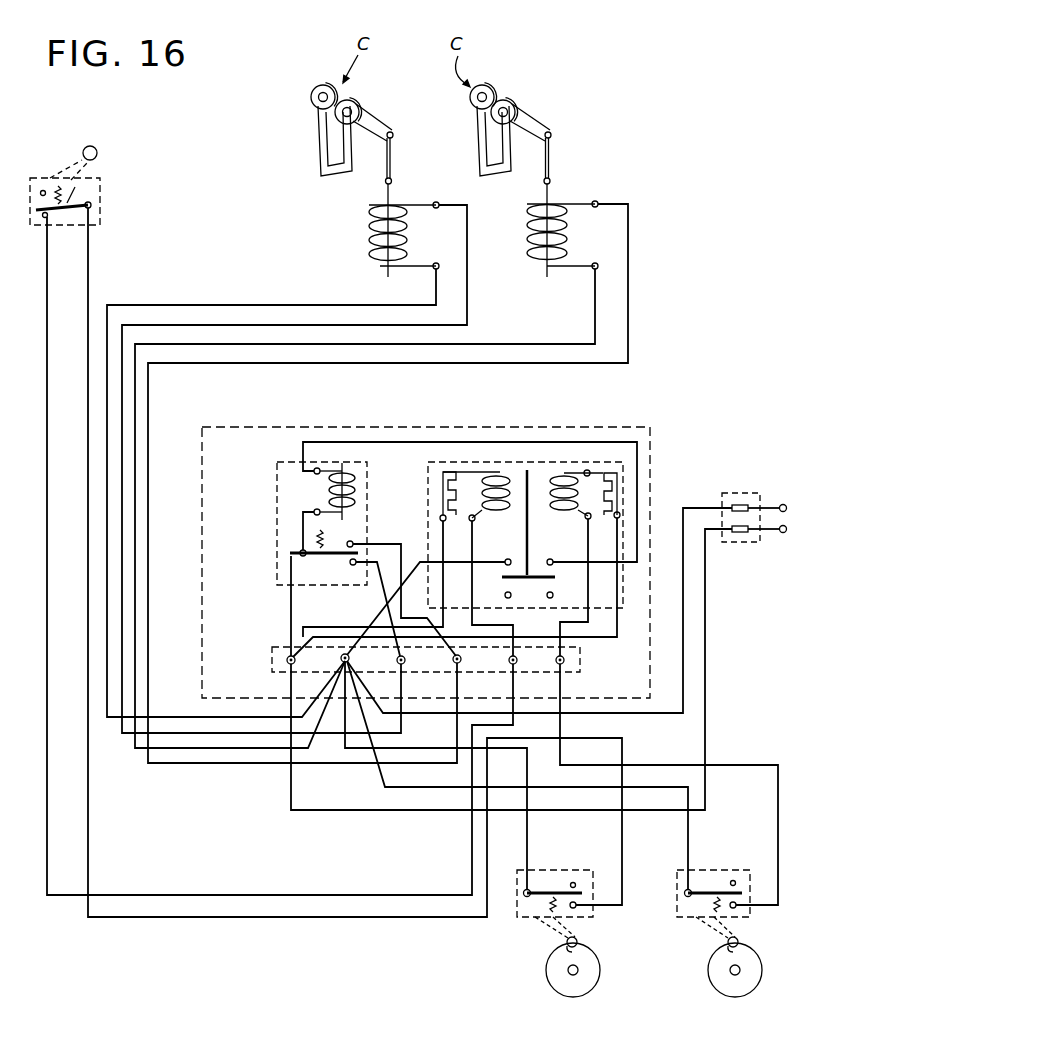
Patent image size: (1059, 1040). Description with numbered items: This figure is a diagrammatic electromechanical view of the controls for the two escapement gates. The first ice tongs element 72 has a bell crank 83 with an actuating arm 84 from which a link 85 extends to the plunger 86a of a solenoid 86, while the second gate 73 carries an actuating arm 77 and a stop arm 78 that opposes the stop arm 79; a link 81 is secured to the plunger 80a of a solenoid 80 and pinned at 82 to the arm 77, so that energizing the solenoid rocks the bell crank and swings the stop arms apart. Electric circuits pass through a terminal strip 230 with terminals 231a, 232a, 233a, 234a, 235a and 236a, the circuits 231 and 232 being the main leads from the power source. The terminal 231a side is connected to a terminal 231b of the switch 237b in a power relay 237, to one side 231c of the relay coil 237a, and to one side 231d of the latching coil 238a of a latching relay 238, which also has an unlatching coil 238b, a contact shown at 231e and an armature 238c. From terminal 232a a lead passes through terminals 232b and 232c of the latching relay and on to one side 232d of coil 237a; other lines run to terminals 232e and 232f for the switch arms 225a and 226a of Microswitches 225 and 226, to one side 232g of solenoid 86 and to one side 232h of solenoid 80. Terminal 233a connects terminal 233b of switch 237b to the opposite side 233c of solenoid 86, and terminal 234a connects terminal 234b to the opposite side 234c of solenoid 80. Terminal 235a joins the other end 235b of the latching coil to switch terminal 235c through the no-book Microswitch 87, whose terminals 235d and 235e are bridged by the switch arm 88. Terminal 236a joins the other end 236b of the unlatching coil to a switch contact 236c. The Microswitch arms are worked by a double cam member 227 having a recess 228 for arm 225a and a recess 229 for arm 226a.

The escapement gate 72 is at (306, 96).
The bell crank 83 is at (380, 106).
The actuating arm 84 is at (388, 122).
The link 85 is at (394, 152).
The solenoid 86 is at (368, 207).
The plunger 86a is at (388, 277).
The side of solenoid 232g is at (418, 230).
The opposite side of solenoid 233c is at (434, 203).
The escapement gate 73 is at (504, 86).
The actuating arm 77 is at (534, 108).
The pin 82 is at (551, 125).
The link 81 is at (554, 154).
The stop arm 79 is at (478, 148).
The stop arm 78 is at (507, 172).
The solenoid 80 is at (567, 204).
The plunger 80a is at (547, 278).
The opposite side of solenoid 234c is at (599, 203).
The side of solenoid 232h is at (595, 266).
The switch arm 88 is at (72, 200).
The Microswitch 87 is at (95, 204).
The terminal 235e is at (92, 205).
The terminal 235d is at (48, 220).
The power relay 237 is at (362, 480).
The coil 237a is at (344, 470).
The switch 237b is at (318, 558).
The side of power relay coil 232d is at (314, 468).
The side of coil 231c is at (314, 512).
The terminal 231b is at (300, 553).
The terminal 234b is at (353, 544).
The terminal 233b is at (351, 564).
The latching relay 238 is at (532, 597).
The latching coil 238a is at (494, 470).
The unlatching coil 238b is at (565, 472).
The relay armature 238c is at (520, 579).
The side of latching coil 231d is at (440, 518).
The terminal 231e is at (619, 514).
The other end of latching coil 235b is at (488, 527).
The other end of unlatching coil 236b is at (563, 526).
The terminal 232b is at (507, 561).
The terminal 232c is at (556, 554).
The terminal strip 230 is at (580, 669).
The terminal 231a is at (287, 661).
The terminal 232a is at (341, 659).
The terminal 233a is at (397, 661).
The terminal 234a is at (453, 662).
The terminal 235a is at (509, 662).
The terminal 236a is at (557, 663).
The circuit 232 is at (783, 505).
The circuit 231 is at (783, 533).
The Microswitch 225 is at (552, 868).
The switch arm 225a is at (538, 896).
The terminal 232e is at (525, 896).
The switch terminal 235c is at (577, 905).
The recess 228 is at (578, 941).
The double cam member 227 is at (556, 973).
The Microswitch 226 is at (697, 868).
The switch arm 226a is at (700, 896).
The terminal 232f is at (686, 893).
The switch contact 236c is at (737, 905).
The recess 229 is at (739, 942).